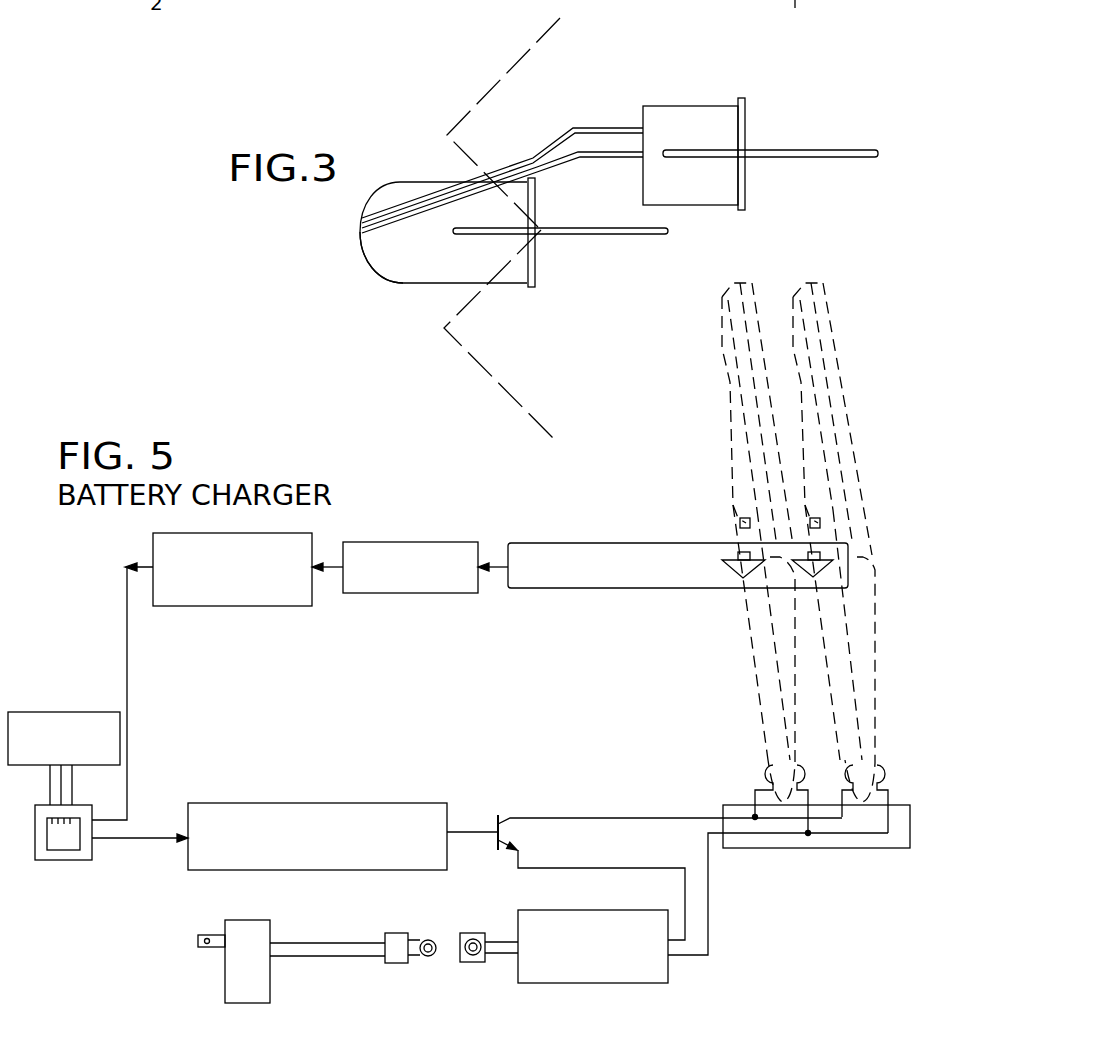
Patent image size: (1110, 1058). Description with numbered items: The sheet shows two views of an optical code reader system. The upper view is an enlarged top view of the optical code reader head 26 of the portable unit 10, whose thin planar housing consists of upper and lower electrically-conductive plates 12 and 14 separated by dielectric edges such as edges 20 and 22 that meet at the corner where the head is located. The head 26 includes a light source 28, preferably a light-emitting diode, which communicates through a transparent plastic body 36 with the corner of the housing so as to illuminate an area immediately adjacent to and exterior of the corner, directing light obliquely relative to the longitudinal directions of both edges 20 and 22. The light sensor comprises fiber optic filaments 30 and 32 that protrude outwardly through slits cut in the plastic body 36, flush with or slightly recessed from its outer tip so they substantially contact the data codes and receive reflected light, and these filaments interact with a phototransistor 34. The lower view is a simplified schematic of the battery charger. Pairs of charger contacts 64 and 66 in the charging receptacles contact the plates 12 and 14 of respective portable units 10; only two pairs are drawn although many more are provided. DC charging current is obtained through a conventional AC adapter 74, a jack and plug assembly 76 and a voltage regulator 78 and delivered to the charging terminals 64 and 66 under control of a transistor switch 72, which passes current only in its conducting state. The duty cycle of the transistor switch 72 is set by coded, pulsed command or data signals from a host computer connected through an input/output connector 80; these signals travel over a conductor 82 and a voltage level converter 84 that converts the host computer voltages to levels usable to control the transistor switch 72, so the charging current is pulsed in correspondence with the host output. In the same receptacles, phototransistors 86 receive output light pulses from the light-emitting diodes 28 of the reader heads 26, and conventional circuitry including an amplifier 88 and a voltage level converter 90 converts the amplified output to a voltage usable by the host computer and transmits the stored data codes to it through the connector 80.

In FIG. 5, the portable unit 10 is at (722, 410).
In FIG. 5, the upper electrically-conductive plate 12 is at (795, 676).
In FIG. 5, the lower electrically-conductive plate 14 is at (772, 695).
In FIG. 3, the elongate edge 20 is at (500, 388).
In FIG. 3, the elongate edge 22 is at (493, 85).
In FIG. 3, the optical code reader head 26 is at (394, 163).
In FIG. 5, the optical code reader head 26 is at (732, 524).
In FIG. 3, the light source 28 is at (453, 231).
In FIG. 3, the fiber optic filament 30 is at (590, 128).
In FIG. 3, the fiber optic filament 32 is at (592, 160).
In FIG. 3, the phototransistor 34 is at (680, 106).
In FIG. 3, the transparent plastic body 36 is at (372, 268).
In FIG. 5, the charger contact 64 is at (803, 765).
In FIG. 5, the charger contact 66 is at (760, 776).
In FIG. 5, the transistor switch 72 is at (500, 815).
In FIG. 5, the AC adapter 74 is at (262, 978).
In FIG. 5, the jack and plug assembly 76 is at (422, 960).
In FIG. 5, the voltage regulator 78 is at (522, 910).
In FIG. 5, the input/output connector 80 is at (67, 860).
In FIG. 5, the conductor 82 is at (138, 840).
In FIG. 5, the voltage level converter 84 is at (353, 803).
In FIG. 5, the phototransistor 86 is at (738, 552).
In FIG. 5, the amplifier 88 is at (412, 542).
In FIG. 5, the voltage level converter 90 is at (276, 606).